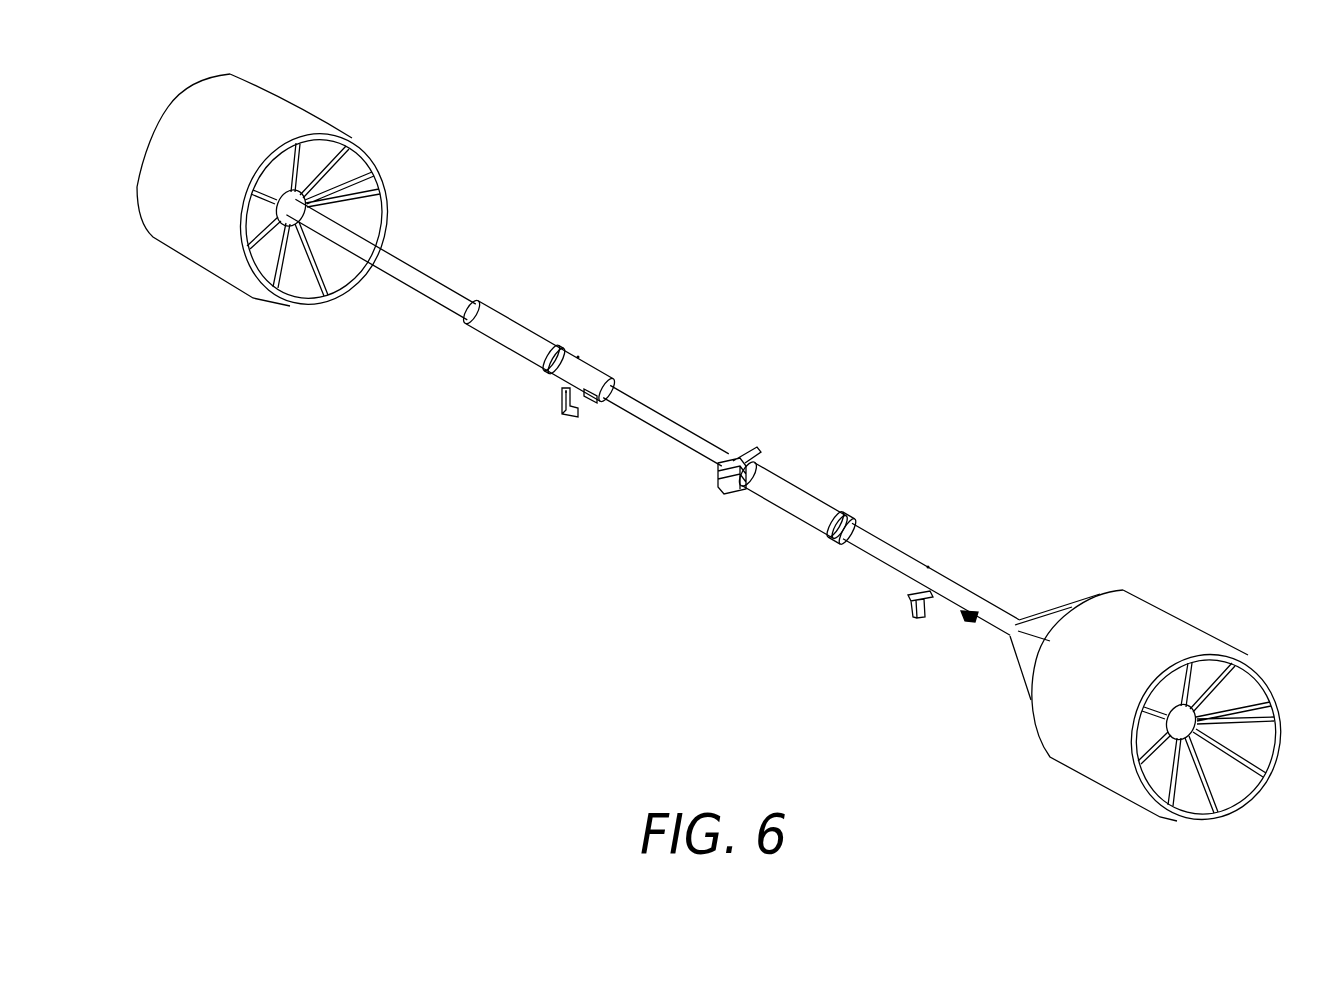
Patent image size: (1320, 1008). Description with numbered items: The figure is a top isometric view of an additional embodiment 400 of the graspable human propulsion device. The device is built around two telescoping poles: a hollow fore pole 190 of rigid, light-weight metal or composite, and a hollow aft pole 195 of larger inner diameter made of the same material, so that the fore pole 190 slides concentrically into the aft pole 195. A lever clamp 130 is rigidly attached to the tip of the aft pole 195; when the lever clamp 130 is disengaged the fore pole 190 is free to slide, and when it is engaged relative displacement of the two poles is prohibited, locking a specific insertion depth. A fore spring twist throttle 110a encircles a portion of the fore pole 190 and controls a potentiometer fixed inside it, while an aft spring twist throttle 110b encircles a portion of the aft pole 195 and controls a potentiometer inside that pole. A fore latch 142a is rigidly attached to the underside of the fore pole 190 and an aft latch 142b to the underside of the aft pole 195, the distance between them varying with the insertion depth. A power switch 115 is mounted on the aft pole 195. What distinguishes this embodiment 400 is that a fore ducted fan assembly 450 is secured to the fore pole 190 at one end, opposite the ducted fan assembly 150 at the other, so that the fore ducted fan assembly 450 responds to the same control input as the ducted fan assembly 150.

The embodiment 4 400 is at (853, 445).
The fore ducted fan assembly 450 is at (372, 127).
The ducted fan assembly 150 is at (1184, 587).
The fore spring twist throttle 110a is at (494, 344).
The aft spring twist throttle 110b is at (769, 506).
The fore pole 190 is at (627, 391).
The aft pole 195 is at (967, 587).
The lever clamp 130 is at (718, 483).
The fore latch 142a is at (563, 394).
The aft latch 142b is at (913, 612).
The power switch 115 is at (971, 618).